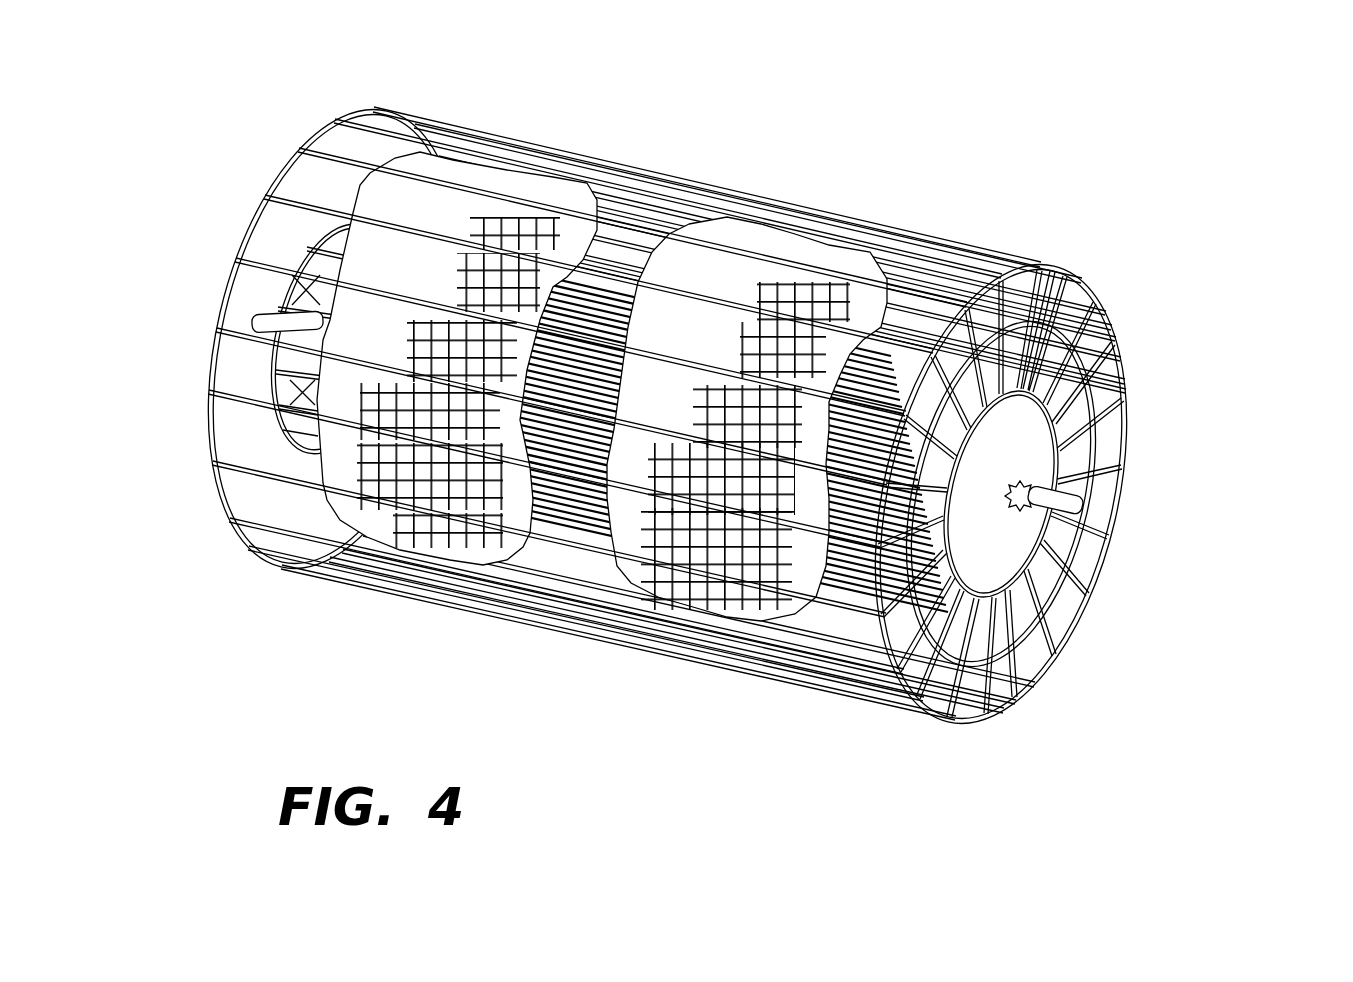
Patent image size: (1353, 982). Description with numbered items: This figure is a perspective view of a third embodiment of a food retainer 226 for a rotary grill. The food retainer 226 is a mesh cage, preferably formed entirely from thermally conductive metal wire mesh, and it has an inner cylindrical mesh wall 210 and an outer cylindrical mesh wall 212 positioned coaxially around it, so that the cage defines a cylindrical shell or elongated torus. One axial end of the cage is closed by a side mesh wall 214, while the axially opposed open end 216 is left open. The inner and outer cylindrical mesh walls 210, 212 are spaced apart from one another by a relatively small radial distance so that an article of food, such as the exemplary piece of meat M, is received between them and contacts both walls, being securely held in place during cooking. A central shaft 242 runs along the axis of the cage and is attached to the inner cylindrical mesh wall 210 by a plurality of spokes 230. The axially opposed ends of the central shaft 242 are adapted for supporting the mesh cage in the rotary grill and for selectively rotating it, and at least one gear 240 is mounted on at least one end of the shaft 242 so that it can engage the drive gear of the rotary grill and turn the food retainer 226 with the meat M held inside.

The inner cylindrical mesh wall 210 is at (1000, 568).
The outer cylindrical mesh wall 212 is at (656, 665).
The side mesh wall 214 is at (1113, 328).
The axially opposed open end 216 is at (185, 441).
The food retainer 226 is at (1175, 179).
The spokes 230 is at (1043, 446).
The gear 240 is at (1022, 508).
The central shaft 242 is at (255, 318).
The piece of meat M is at (457, 200).